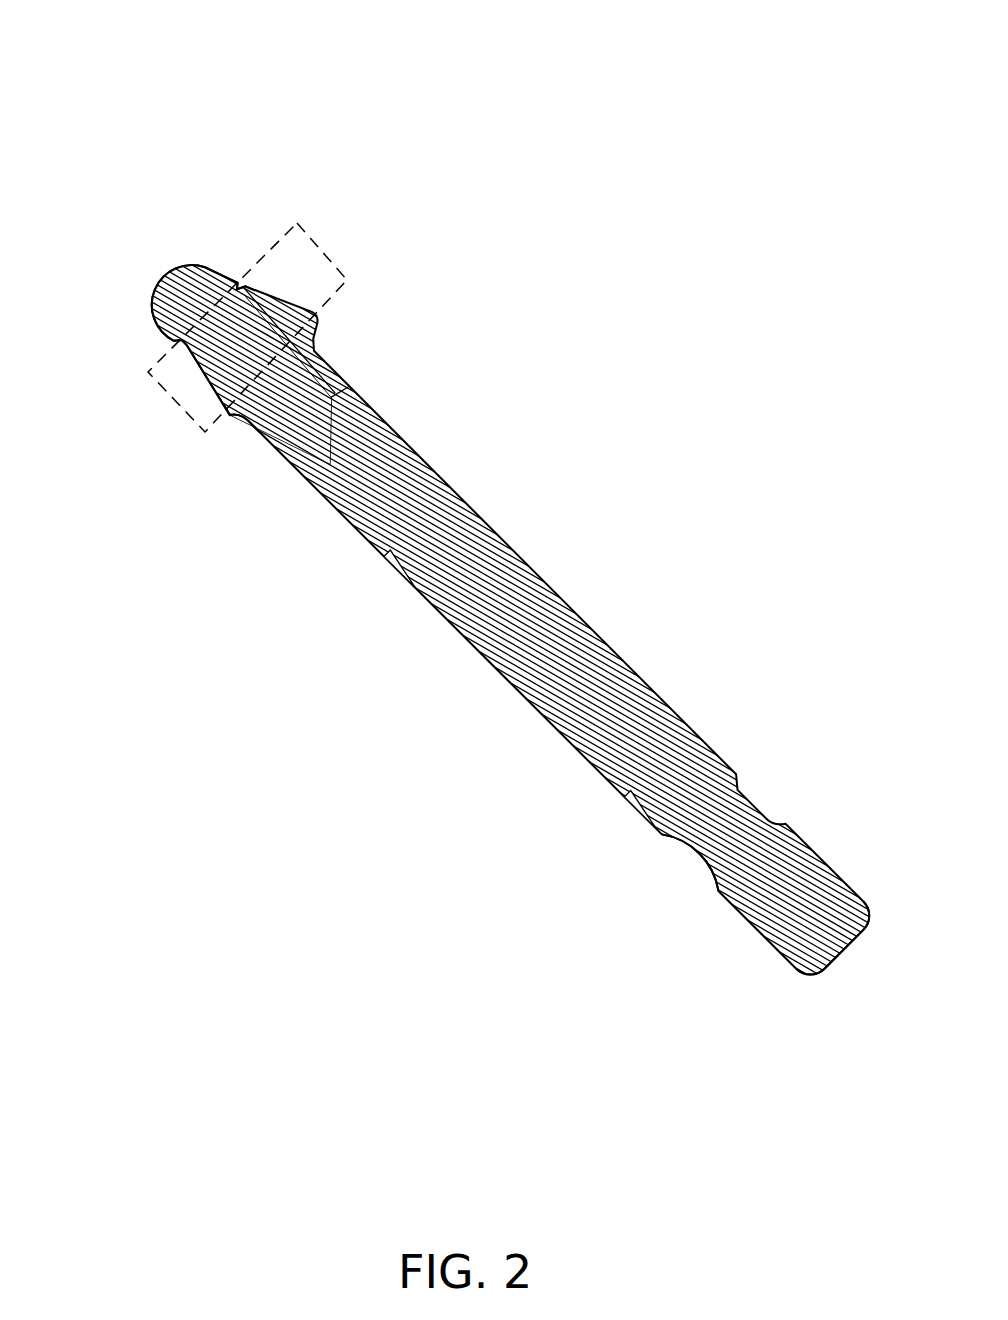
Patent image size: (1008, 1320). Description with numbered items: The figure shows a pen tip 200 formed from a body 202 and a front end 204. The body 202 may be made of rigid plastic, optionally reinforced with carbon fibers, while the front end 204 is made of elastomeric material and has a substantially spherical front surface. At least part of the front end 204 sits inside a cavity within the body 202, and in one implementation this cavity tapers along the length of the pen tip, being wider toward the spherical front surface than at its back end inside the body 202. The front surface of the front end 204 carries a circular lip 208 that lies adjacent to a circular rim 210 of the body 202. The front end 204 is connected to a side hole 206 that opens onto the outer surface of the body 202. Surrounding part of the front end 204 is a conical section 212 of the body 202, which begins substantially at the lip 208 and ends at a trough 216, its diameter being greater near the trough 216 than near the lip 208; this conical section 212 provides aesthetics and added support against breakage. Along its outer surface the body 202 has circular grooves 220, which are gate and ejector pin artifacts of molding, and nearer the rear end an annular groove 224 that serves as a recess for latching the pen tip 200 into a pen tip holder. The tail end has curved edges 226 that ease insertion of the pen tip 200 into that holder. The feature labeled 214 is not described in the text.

The pen tip 200 is at (167, 49).
The body 202 is at (428, 481).
The front end 204 is at (195, 271).
The side hole 206 is at (362, 382).
The circular lip 208 is at (161, 339).
The circular rim 210 is at (180, 365).
The conical section 212 is at (362, 252).
The notch 214 is at (257, 268).
The trough 216 is at (229, 432).
The grooves 220 is at (607, 804).
The annular groove 224 is at (674, 876).
The curved edges 226 is at (804, 990).